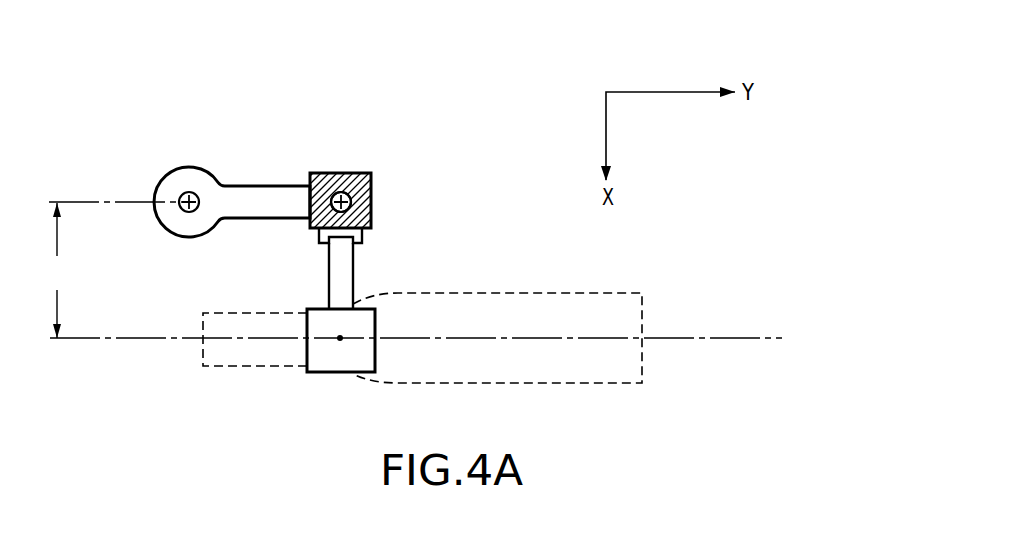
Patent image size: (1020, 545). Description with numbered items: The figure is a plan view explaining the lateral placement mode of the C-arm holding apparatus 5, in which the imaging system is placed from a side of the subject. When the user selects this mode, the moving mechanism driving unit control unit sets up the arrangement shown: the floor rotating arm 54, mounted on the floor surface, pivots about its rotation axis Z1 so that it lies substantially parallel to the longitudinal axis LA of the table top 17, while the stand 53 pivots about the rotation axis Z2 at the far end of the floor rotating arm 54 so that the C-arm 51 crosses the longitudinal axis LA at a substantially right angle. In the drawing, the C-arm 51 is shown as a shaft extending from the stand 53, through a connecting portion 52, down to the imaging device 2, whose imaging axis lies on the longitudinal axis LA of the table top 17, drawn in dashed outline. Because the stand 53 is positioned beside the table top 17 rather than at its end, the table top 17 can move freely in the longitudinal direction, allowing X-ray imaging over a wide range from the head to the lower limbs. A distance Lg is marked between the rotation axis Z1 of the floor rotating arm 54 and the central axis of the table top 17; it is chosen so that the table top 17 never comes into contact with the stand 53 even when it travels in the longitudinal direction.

The C-arm holding apparatus 5 is at (458, 90).
The floor rotating arm 54 is at (260, 186).
The stand 53 is at (337, 173).
The connecting member 52 is at (363, 233).
The C-arm 51 is at (335, 273).
The camera 2 is at (313, 368).
The table top 17 is at (573, 292).
The rotation axis Z1 is at (183, 196).
The rotation axis Z2 is at (352, 204).
The longitudinal axis LA is at (431, 337).
The distance Lg is at (58, 270).